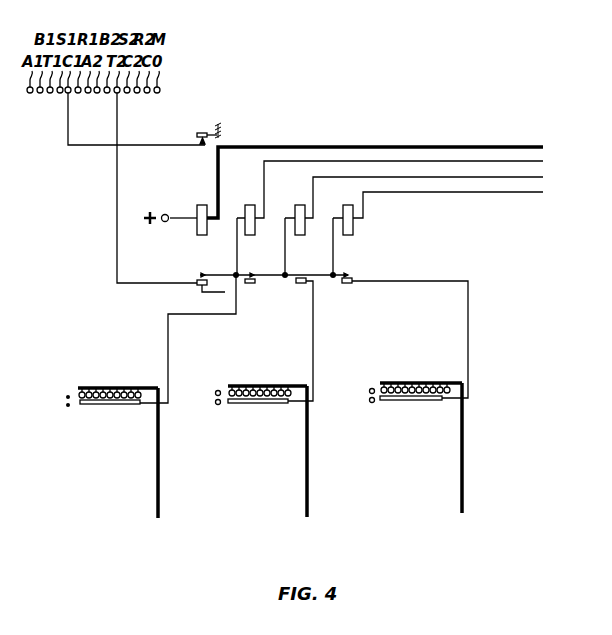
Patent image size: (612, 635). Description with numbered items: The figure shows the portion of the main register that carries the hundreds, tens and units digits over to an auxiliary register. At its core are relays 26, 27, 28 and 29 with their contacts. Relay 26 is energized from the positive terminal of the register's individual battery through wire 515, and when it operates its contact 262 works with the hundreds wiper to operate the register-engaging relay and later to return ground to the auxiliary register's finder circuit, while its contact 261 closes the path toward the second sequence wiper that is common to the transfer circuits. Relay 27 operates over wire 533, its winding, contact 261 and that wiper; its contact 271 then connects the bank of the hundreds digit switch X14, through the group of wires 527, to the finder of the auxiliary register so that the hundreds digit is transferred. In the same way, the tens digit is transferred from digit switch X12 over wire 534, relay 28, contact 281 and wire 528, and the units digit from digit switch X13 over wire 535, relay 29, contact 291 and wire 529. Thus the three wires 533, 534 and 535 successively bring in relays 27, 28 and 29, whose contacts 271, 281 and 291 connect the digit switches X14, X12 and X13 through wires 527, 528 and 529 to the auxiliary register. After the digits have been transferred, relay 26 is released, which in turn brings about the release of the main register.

The contact of relay 26 262 is at (195, 130).
The relay 26 is at (179, 209).
The relay 27 is at (251, 229).
The relay 28 is at (300, 229).
The relay 29 is at (348, 229).
The wire 515 is at (395, 175).
The wire 533 is at (419, 183).
The wire 534 is at (444, 192).
The wire 535 is at (468, 200).
The contact of relay 26 261 is at (198, 274).
The contact of relay 27 271 is at (268, 290).
The contact of relay 28 281 is at (307, 327).
The contact of relay 29 291 is at (405, 325).
The group of wires 527 is at (166, 469).
The wire 528 is at (315, 467).
The wire 529 is at (466, 464).
The hundreds digit switch X14 is at (112, 410).
The tens digit switch X12 is at (262, 408).
The units digit switch X13 is at (416, 405).